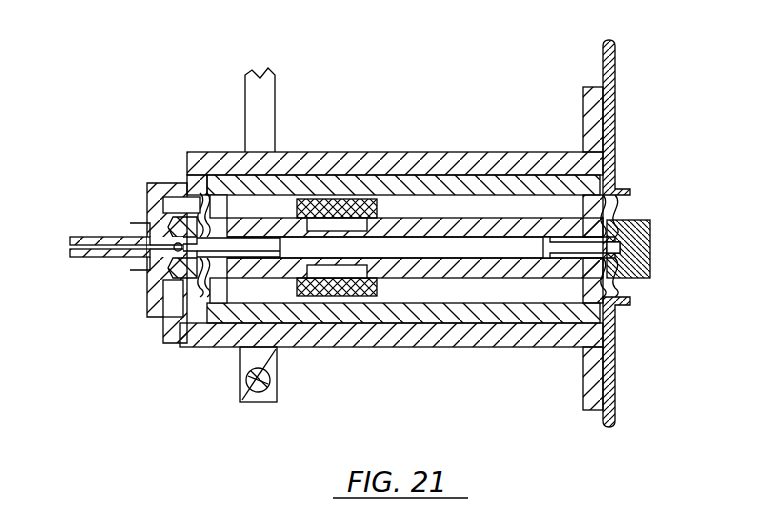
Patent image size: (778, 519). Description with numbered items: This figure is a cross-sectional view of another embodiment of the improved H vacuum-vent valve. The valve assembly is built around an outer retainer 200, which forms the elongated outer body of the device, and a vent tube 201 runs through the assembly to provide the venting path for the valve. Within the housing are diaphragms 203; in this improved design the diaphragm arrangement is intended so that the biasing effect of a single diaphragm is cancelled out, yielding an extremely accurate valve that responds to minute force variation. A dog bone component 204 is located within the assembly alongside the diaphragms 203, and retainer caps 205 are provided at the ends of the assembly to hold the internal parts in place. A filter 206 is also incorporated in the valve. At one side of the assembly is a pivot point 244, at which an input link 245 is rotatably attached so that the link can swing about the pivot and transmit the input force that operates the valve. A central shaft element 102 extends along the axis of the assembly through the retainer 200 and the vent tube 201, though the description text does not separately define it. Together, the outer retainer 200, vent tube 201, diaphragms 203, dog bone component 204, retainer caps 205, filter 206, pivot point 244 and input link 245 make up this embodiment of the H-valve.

The shaft 102 is at (565, 234).
The outer retainer 200 is at (284, 169).
The vent tube 201 is at (404, 215).
The diaphragms 203 is at (189, 212).
The dog bone component 204 is at (157, 262).
The retainer caps 205 is at (648, 281).
The filter 206 is at (627, 205).
The pivot point 244 is at (274, 386).
The input link 245 is at (166, 181).